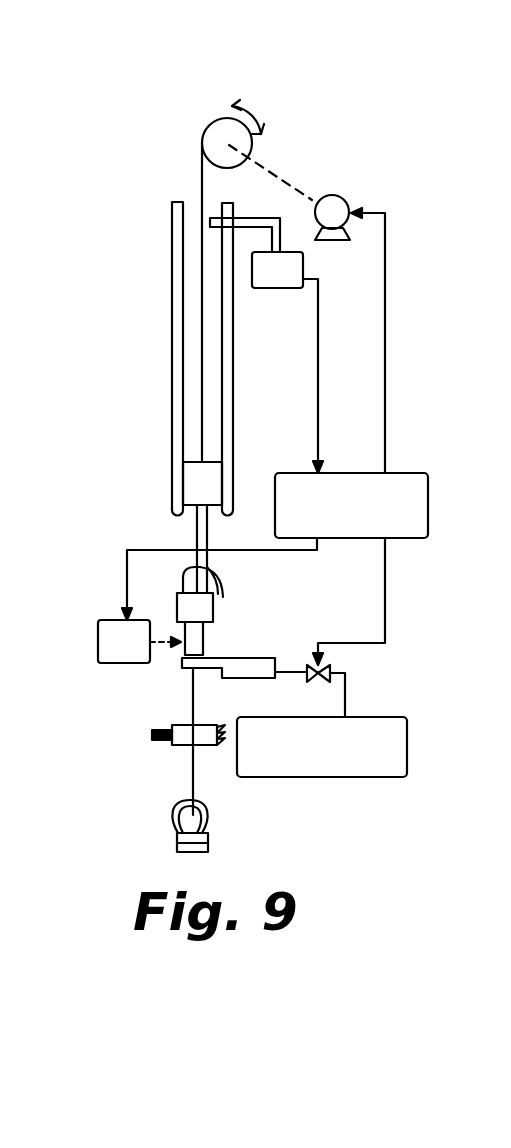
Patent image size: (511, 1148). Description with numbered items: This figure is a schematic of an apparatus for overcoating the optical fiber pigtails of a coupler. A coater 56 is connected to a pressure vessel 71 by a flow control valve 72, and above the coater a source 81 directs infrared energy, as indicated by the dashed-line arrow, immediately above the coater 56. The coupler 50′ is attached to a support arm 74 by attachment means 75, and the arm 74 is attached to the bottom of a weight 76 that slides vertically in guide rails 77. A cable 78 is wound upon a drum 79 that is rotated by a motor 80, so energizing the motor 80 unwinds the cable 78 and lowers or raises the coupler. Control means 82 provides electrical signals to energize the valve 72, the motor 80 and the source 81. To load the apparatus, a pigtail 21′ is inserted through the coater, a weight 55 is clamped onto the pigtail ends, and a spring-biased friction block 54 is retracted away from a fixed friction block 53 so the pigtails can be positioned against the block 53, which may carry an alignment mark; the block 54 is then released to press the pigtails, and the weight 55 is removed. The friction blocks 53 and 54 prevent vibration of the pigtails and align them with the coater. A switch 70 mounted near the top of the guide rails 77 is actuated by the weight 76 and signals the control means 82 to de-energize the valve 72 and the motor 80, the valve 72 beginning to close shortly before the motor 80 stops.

The drum 79 is at (213, 140).
The motor 80 is at (340, 197).
The switch 70 is at (303, 268).
The guide rails 77 is at (171, 308).
The cable 78 is at (203, 362).
The weight 76 is at (193, 482).
The support arm 74 is at (197, 530).
The control means 82 is at (428, 501).
The attachment means 75 is at (203, 608).
The coater 56 is at (250, 658).
The coupler 50′ is at (187, 650).
The source 81 is at (115, 667).
The flow control valve 72 is at (310, 678).
The pressure vessel 71 is at (340, 777).
The fixed friction block 53 is at (208, 745).
The spring-biased friction block 54 is at (165, 746).
The pigtail 21′ is at (190, 787).
The weight 55 is at (177, 843).